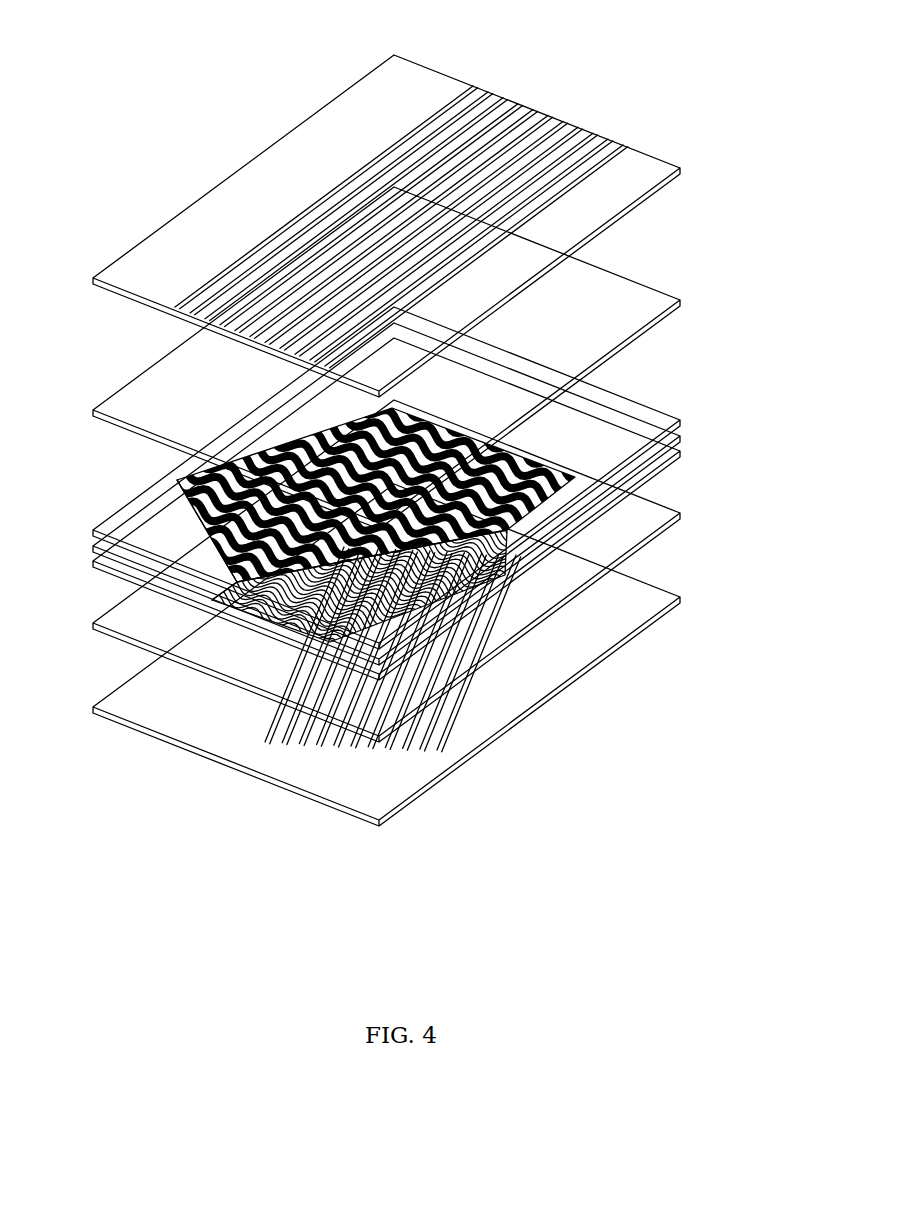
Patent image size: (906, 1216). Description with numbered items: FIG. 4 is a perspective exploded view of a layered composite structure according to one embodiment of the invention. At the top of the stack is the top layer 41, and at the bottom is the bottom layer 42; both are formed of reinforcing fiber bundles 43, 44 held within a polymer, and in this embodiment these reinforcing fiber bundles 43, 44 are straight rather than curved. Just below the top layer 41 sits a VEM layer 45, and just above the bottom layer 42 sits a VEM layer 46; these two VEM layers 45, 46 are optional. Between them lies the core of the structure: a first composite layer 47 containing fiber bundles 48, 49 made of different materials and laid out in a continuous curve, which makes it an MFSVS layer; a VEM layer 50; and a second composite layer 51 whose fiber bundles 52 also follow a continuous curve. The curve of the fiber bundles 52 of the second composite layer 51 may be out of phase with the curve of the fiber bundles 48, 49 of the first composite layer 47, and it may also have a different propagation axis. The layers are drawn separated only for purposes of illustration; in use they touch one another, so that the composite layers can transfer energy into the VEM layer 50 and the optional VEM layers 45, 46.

The top layer 41 is at (324, 129).
The bottom layer 42 is at (608, 642).
The reinforcing fiber bundles 43 is at (475, 98).
The reinforcing fiber bundles 44 is at (443, 740).
The VEM layer 45 is at (630, 304).
The VEM layer 46 is at (642, 532).
The first composite layer 47 is at (686, 426).
The fiber bundles 48 is at (193, 478).
The fiber bundles 49 is at (190, 545).
The VEM layer 50 is at (690, 443).
The second composite layer 51 is at (688, 462).
The fiber bundles 52 is at (500, 512).